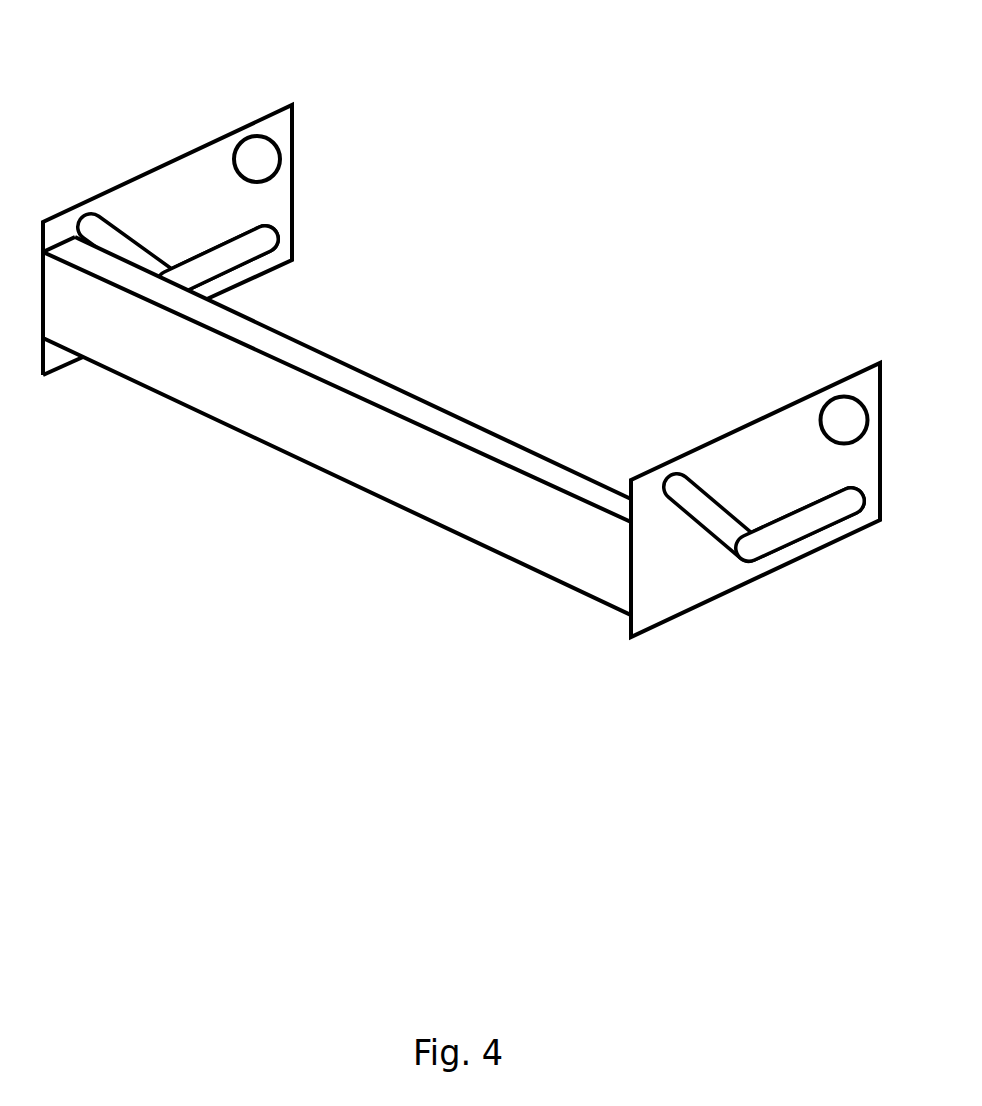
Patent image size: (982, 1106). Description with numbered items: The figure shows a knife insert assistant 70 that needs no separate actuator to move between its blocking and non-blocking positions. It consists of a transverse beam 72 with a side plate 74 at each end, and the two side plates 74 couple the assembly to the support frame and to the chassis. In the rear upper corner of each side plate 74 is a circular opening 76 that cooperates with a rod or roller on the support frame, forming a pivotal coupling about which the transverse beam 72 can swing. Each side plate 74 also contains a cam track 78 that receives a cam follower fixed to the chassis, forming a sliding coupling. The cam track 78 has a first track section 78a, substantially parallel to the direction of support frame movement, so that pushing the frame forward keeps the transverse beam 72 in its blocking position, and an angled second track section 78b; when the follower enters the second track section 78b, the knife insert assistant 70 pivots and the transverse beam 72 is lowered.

The knife insert assistant 70 is at (461, 362).
The transverse beam 72 is at (322, 474).
The side plate 74 is at (170, 158).
The circular opening 76 is at (281, 158).
The cam track 78 is at (461, 393).
The first track section 78a is at (242, 256).
The second track section 78b is at (93, 226).